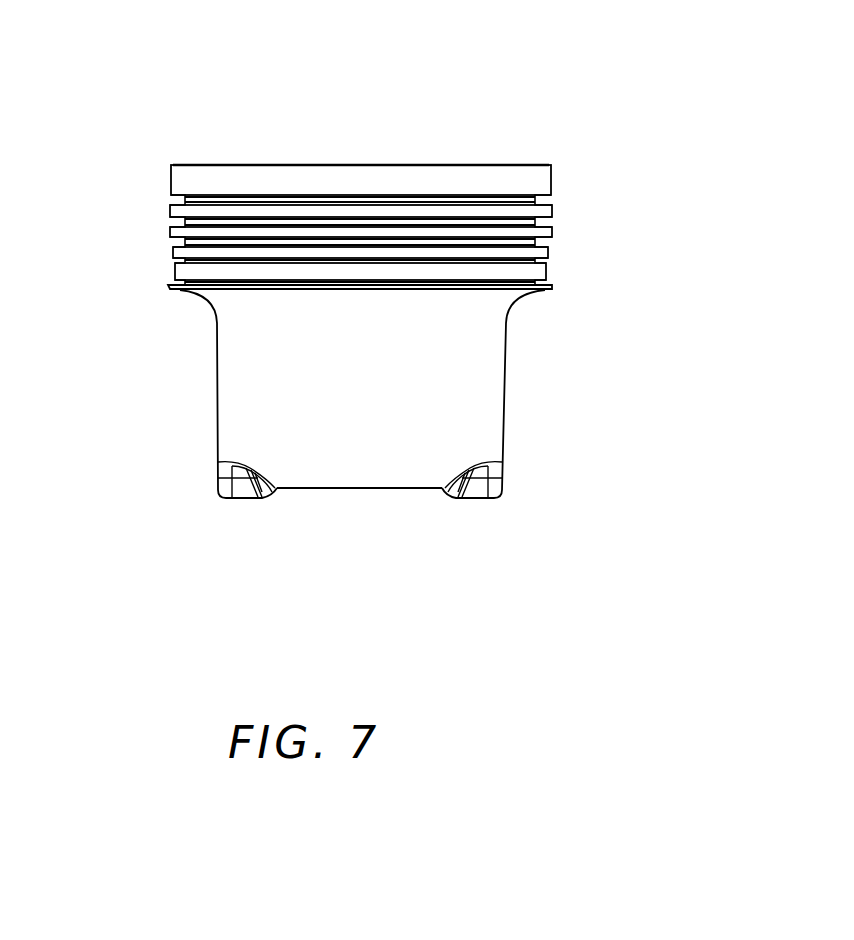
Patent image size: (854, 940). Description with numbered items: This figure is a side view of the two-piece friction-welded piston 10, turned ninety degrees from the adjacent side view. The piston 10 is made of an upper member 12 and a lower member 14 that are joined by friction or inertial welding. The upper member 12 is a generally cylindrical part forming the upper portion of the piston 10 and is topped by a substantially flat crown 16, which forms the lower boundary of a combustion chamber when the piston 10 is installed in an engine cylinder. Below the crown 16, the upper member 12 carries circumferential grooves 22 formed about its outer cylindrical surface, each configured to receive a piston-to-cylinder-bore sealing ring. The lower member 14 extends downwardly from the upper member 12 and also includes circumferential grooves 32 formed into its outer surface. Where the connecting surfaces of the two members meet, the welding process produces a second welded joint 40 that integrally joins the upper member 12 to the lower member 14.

The piston 10 is at (692, 168).
The upper member 12 is at (538, 180).
The lower member 14 is at (379, 469).
The crown 16 is at (491, 166).
The circumferential groove 22 is at (171, 225).
The groove 32 is at (174, 264).
The second welded joint 40 is at (173, 243).